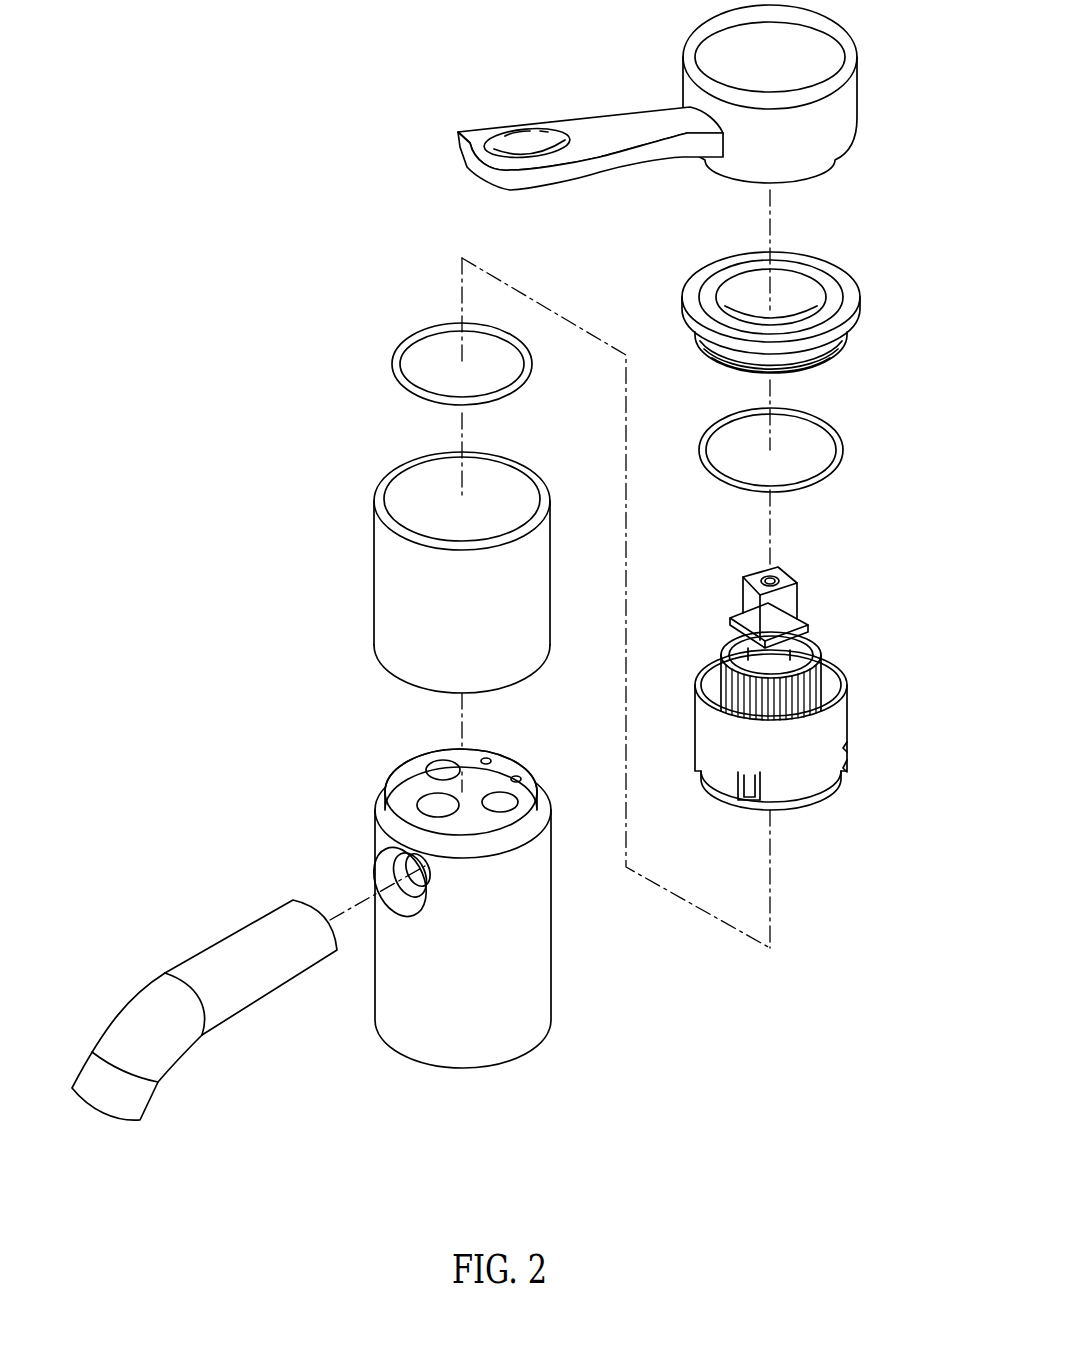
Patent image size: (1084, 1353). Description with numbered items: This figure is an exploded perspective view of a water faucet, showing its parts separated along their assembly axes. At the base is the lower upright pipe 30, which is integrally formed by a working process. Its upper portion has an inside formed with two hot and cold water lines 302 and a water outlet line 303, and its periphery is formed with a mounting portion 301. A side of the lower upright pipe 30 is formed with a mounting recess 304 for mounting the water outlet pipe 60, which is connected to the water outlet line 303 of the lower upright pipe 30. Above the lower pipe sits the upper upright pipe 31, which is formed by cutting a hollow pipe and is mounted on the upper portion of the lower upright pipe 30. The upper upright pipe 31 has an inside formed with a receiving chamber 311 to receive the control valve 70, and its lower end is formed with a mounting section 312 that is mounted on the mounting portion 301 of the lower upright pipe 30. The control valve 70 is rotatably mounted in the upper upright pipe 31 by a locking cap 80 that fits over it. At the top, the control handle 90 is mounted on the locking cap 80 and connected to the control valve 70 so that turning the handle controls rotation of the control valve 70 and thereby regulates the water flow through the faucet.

The control handle 90 is at (657, 77).
The locking cap 80 is at (855, 273).
The control valve 70 is at (857, 710).
The upper upright pipe 31 is at (370, 536).
The receiving chamber 311 is at (422, 498).
The mounting section 312 is at (407, 690).
The lower upright pipe 30 is at (446, 919).
The mounting portion 301 is at (497, 852).
The water lines 302 is at (432, 770).
The water outlet line 303 is at (428, 806).
The mounting recess 304 is at (380, 875).
The water outlet pipe 60 is at (250, 1020).